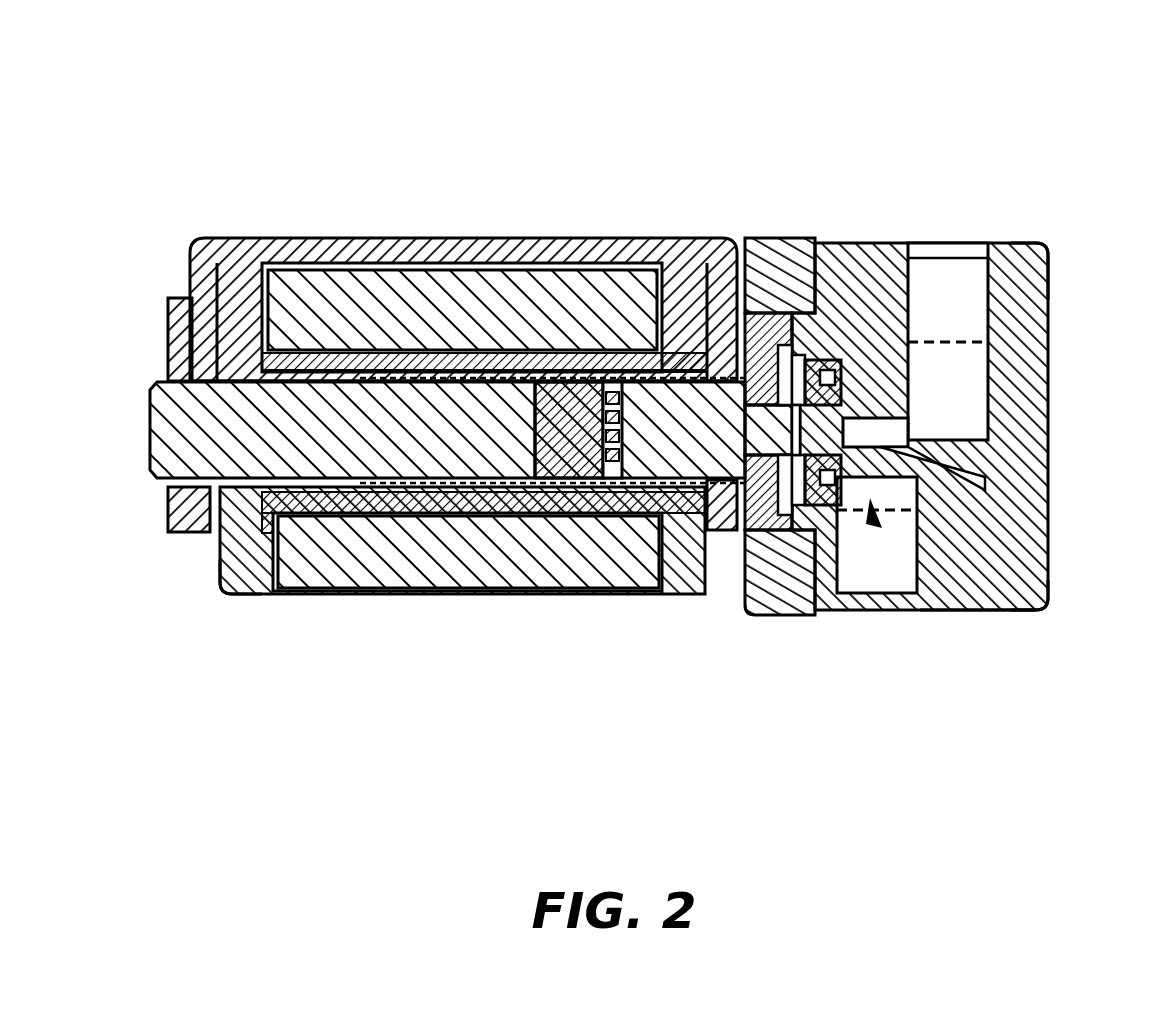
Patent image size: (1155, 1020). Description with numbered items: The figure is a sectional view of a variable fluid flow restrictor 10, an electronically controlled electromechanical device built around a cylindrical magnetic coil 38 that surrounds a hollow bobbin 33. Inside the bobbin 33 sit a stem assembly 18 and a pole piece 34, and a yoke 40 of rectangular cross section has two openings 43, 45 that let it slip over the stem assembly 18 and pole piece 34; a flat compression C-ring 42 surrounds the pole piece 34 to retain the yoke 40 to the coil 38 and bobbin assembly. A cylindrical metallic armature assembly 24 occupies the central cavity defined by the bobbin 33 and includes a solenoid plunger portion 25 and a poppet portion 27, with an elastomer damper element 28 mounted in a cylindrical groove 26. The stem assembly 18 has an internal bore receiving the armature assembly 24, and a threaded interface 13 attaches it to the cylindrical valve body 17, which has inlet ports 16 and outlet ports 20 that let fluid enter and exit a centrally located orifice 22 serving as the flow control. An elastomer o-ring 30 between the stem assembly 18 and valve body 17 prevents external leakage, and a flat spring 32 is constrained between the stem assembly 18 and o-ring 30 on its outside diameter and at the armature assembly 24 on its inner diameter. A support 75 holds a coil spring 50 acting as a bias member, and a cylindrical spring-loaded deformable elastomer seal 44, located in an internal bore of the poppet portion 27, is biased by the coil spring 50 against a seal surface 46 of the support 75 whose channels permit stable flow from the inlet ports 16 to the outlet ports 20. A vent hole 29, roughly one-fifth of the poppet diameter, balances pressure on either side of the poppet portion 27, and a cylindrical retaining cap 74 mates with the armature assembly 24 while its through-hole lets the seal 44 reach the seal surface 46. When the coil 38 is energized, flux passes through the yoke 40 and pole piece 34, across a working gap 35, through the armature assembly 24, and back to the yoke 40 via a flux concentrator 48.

The variable fluid flow restrictor 10 is at (757, 127).
The threaded interface 13 is at (765, 627).
The inlet port 16 is at (963, 297).
The valve body 17 is at (1052, 270).
The stem assembly 18 is at (760, 330).
The outlet port 20 is at (897, 572).
The orifice 22 is at (1030, 608).
The armature assembly 24 is at (705, 238).
The solenoid plunger portion 25 is at (637, 380).
The cylindrical groove 26 is at (612, 470).
The poppet portion 27 is at (825, 500).
The elastomer damper element 28 is at (618, 470).
The vent hole 29 is at (840, 378).
The o-ring 30 is at (795, 370).
The flat spring 32 is at (800, 490).
The bobbin 33 is at (250, 598).
The pole piece 34 is at (340, 462).
The working gap 35 is at (545, 470).
The magnetic coil 38 is at (312, 557).
The yoke 40 is at (415, 238).
The flat compression C-ring 42 is at (180, 298).
The opening 43 is at (170, 500).
The cylindrical spring-loaded deformable elastomer seal 44 is at (960, 520).
The opening 45 is at (724, 527).
The seal surface 46 is at (908, 317).
The flux concentrator 48 is at (593, 383).
The coil spring 50 is at (830, 375).
The cylindrical retaining cap 74 is at (862, 520).
The support 75 is at (875, 530).